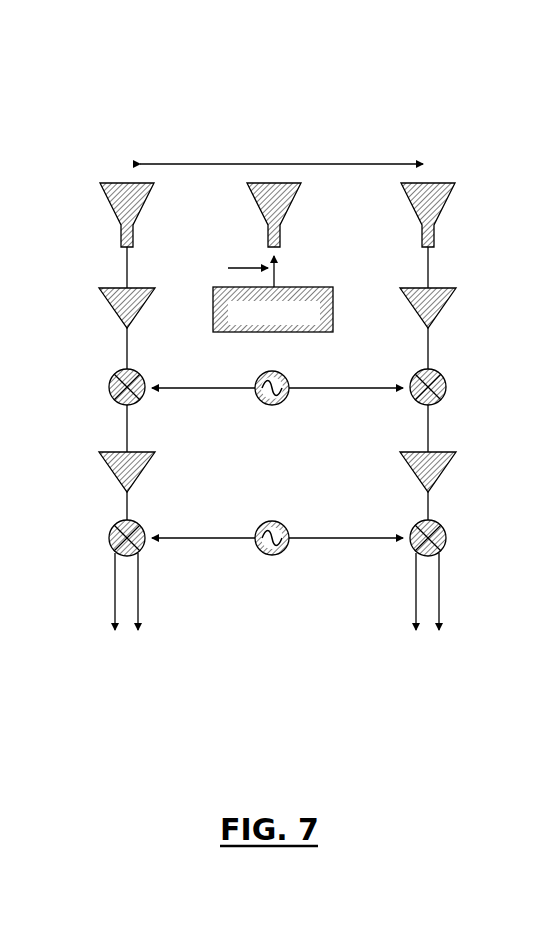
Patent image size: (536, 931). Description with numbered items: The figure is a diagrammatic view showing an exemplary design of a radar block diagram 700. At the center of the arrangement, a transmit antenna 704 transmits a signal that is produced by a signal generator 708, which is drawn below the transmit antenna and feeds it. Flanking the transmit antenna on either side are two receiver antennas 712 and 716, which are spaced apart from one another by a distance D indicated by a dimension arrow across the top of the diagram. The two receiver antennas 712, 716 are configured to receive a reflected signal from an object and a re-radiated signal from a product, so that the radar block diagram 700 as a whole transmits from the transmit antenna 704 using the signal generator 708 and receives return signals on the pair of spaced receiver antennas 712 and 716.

The radar block diagram 700 is at (190, 50).
The transmit antenna 704 is at (292, 200).
The signal generator 708 is at (213, 324).
The receiver antenna 712 is at (106, 192).
The receiver antenna 716 is at (445, 200).